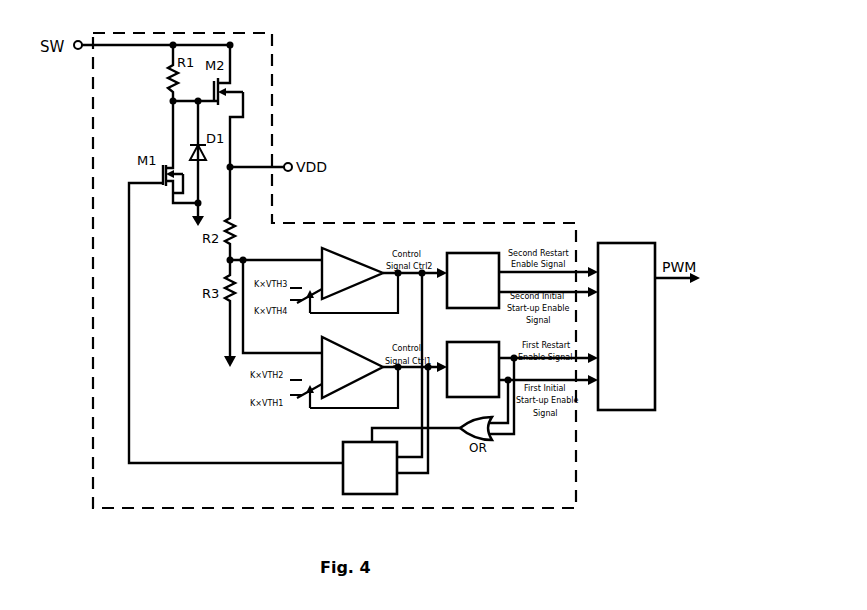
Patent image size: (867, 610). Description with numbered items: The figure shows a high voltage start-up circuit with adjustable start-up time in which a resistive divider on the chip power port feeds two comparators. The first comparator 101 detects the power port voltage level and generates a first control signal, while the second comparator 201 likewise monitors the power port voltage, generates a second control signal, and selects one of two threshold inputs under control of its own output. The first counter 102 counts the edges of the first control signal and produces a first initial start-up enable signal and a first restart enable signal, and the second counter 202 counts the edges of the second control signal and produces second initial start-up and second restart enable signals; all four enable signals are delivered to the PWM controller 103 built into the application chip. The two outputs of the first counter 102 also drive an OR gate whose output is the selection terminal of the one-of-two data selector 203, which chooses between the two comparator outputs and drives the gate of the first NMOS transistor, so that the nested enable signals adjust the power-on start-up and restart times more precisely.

The first comparator 101 is at (343, 352).
The first counter 102 is at (476, 342).
The PWM controller 103 is at (620, 243).
The second comparator 201 is at (343, 258).
The second counter 202 is at (477, 253).
The one-of-two data selector 203 is at (376, 494).